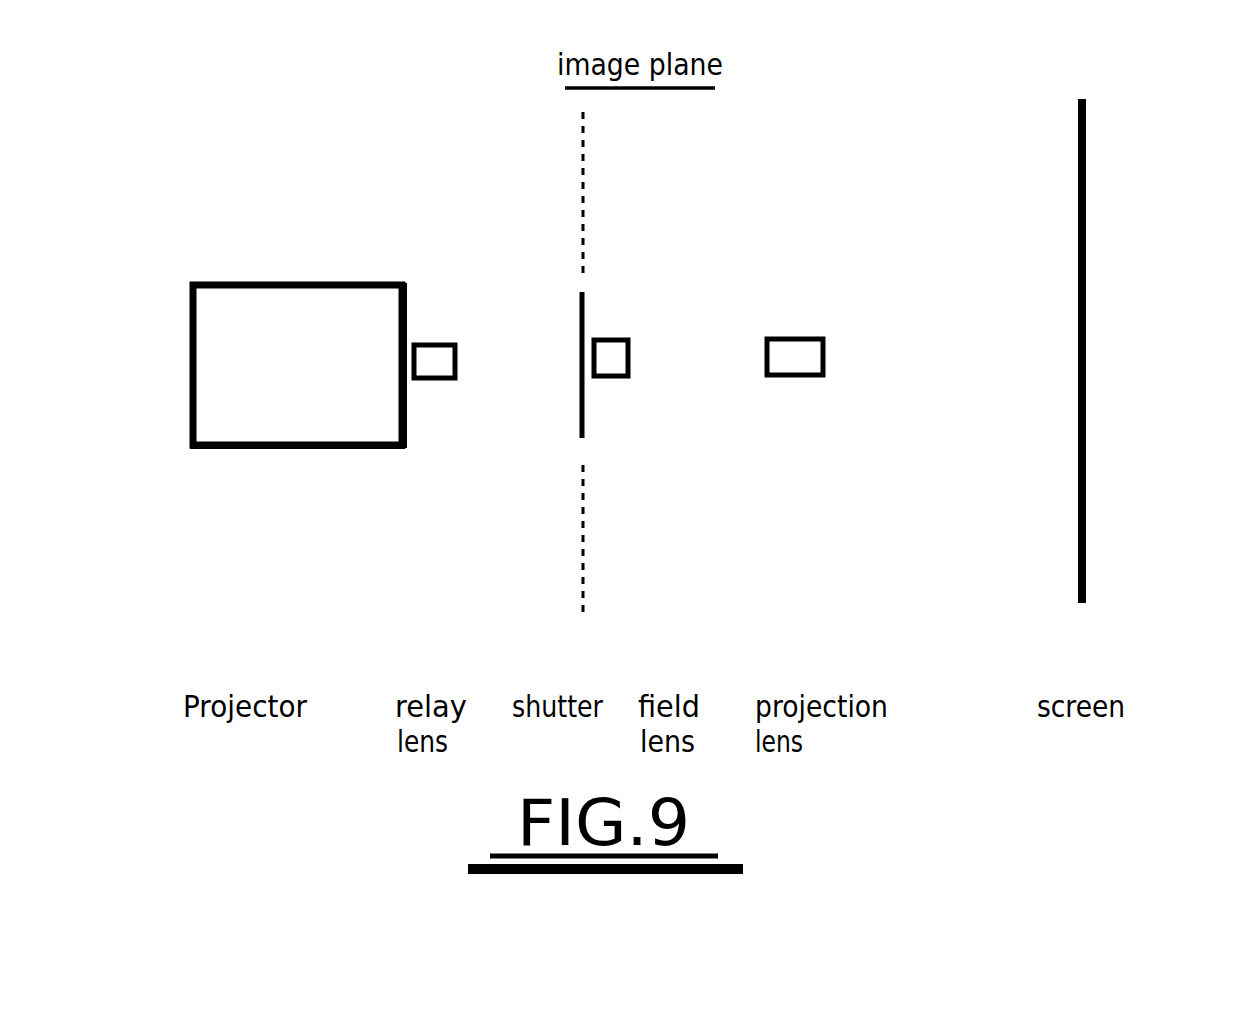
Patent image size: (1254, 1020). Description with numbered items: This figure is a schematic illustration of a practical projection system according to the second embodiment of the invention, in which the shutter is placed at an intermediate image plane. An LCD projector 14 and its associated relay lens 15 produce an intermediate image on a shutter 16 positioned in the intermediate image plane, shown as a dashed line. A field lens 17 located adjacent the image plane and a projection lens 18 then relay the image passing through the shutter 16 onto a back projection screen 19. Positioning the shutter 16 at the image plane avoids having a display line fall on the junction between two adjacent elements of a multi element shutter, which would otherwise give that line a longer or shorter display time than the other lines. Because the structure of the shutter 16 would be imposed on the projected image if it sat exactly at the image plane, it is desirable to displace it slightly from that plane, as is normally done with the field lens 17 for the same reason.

The LCD projector 14 is at (225, 403).
The relay lens 15 is at (425, 357).
The shutter 16 is at (583, 410).
The field lens 17 is at (607, 355).
The projection lens 18 is at (800, 358).
The back projection screen 19 is at (1083, 308).